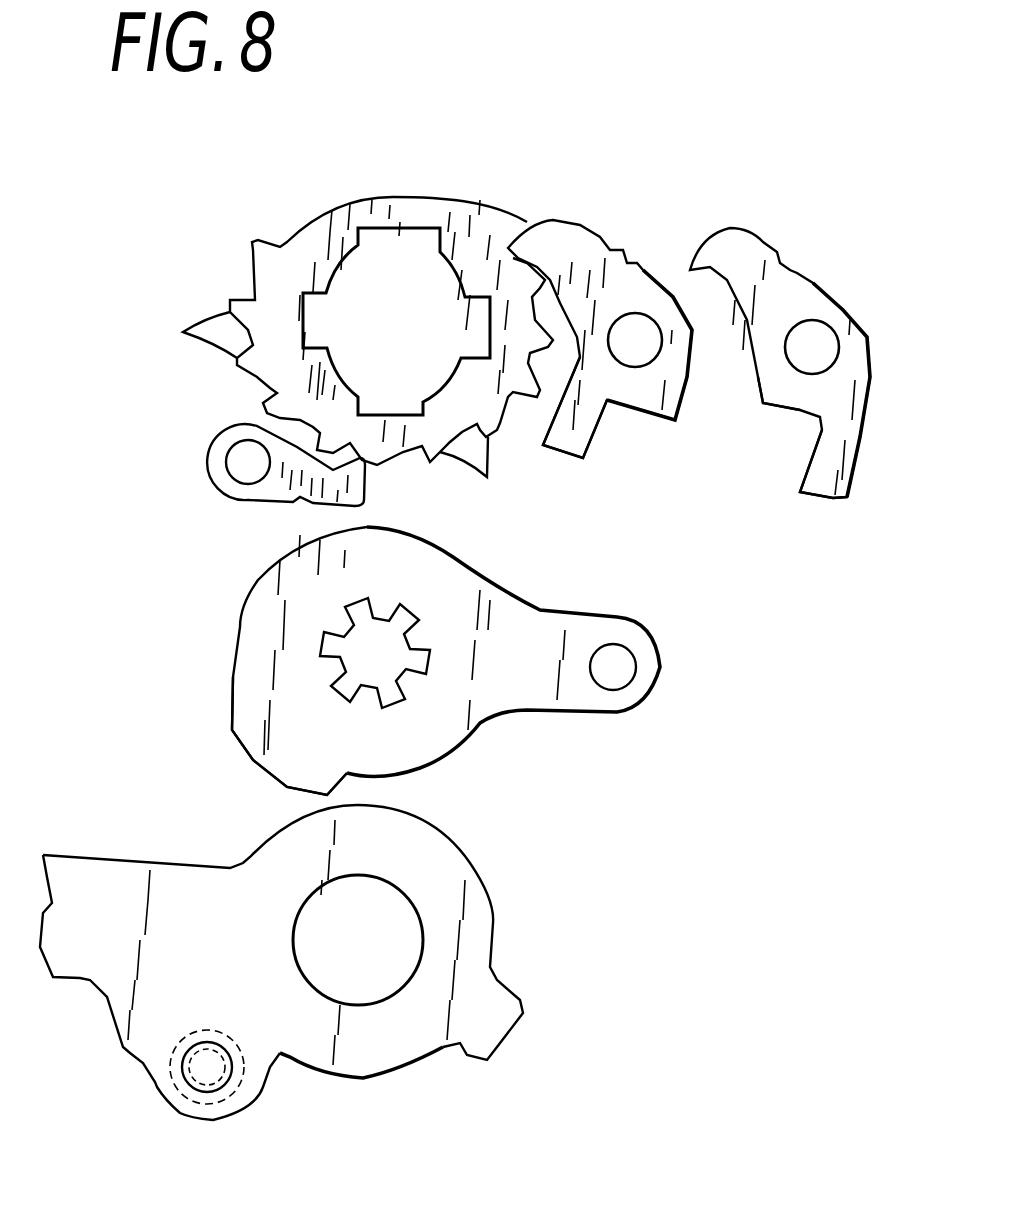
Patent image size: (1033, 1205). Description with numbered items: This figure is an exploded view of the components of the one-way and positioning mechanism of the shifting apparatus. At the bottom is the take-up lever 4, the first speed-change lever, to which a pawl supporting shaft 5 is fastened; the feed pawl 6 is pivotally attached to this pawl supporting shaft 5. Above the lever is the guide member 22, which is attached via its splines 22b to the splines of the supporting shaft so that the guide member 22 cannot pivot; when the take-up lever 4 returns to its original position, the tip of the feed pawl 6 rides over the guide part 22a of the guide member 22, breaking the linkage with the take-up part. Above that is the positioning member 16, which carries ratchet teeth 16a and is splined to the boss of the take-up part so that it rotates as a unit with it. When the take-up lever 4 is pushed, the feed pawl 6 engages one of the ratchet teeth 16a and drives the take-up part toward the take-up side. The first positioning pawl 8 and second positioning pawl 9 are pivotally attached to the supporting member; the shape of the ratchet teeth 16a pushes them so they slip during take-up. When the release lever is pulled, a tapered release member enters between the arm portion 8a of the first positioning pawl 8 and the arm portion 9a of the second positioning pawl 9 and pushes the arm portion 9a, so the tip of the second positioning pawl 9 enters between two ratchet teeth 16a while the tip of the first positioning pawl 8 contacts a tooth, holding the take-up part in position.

The take-up lever 4 is at (95, 860).
The pawl supporting shaft 5 is at (210, 1063).
The feed pawl 6 is at (248, 492).
The first positioning pawl 8 is at (582, 242).
The arm portion of the first positioning pawl 8a is at (580, 457).
The second positioning pawl 9 is at (742, 247).
The arm portion of the second positioning pawl 9a is at (830, 497).
The positioning member 16 is at (305, 238).
The ratchet teeth 16a is at (186, 332).
The guide member 22 is at (487, 720).
The guide part 22a is at (275, 781).
The splines 22b is at (327, 672).